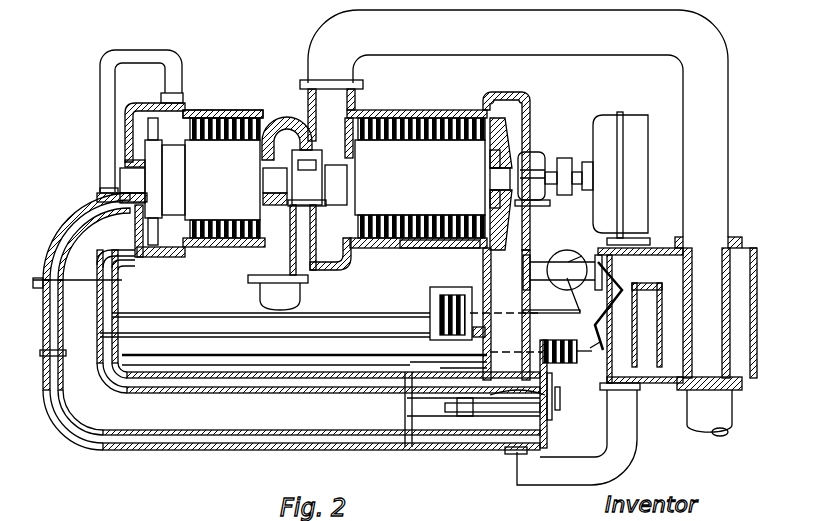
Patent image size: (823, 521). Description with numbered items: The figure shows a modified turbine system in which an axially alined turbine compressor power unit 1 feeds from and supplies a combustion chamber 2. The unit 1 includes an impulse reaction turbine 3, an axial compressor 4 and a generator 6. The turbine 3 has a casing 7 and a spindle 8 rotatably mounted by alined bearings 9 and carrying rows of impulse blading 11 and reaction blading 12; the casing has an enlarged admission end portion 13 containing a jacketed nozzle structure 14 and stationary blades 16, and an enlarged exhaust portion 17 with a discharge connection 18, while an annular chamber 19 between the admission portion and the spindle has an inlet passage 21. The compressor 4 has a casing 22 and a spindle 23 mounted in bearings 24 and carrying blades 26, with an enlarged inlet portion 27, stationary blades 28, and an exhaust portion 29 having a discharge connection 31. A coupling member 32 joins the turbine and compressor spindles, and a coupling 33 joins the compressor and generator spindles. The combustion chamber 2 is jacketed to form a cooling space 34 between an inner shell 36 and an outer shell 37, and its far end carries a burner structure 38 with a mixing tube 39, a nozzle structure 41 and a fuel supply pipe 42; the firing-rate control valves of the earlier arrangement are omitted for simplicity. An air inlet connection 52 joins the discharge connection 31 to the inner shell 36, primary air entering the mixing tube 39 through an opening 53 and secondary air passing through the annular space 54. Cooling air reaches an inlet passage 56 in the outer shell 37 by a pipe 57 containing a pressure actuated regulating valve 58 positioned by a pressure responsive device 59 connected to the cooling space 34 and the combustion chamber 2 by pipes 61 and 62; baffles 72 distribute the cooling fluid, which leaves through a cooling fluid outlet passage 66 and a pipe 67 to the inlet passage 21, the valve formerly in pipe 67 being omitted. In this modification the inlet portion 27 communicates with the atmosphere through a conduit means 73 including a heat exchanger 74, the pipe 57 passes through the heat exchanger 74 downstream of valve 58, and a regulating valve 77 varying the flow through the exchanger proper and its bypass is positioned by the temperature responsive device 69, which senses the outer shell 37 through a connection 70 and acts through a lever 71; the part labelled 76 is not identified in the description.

The turbine compressor power unit 1 is at (274, 83).
The combustion chamber 2 is at (321, 411).
The turbine 3 is at (224, 190).
The axial compressor 4 is at (431, 190).
The generator 6 is at (621, 178).
The casing 7 is at (192, 257).
The spindle 8 is at (268, 140).
The bearings 9 is at (203, 186).
The impulse blading 11 is at (165, 226).
The reaction blading 12 is at (242, 216).
The admission end portion 13 is at (152, 104).
The jacketed nozzle structure 14 is at (138, 262).
The stationary blades 16 is at (212, 248).
The exhaust portion 17 is at (270, 105).
The discharge connection 18 is at (255, 262).
The annular chamber 19 is at (170, 135).
The inlet passage 21 is at (183, 100).
The casing 22 is at (378, 250).
The spindle 23 is at (493, 150).
The bearings 24 is at (417, 179).
The blades 26 is at (443, 210).
The inlet portion 27 is at (333, 270).
The stationary blades 28 is at (420, 250).
The exhaust portion 29 is at (531, 100).
The discharge connection 31 is at (482, 262).
The coupling member 32 is at (320, 162).
The coupling 33 is at (554, 179).
The cooling space 34 is at (48, 368).
The inner shell 36 is at (45, 352).
The outer shell 37 is at (43, 315).
The burner structure 38 is at (562, 416).
The mixing tube 39 is at (410, 408).
The nozzle structure 41 is at (460, 407).
The fuel supply pipe 42 is at (560, 397).
The air inlet connection 52 is at (488, 362).
The opening 53 is at (508, 384).
The annular space 54 is at (440, 362).
The inlet passage 56 is at (508, 458).
The pipe 57 is at (553, 255).
The regulating valve 58 is at (580, 258).
The pressure responsive device 59 is at (452, 286).
The pipe 61 is at (378, 312).
The pipe 62 is at (368, 340).
The cooling fluid outlet passage 66 is at (100, 188).
The pipe 67 is at (100, 75).
The temperature responsive device 69 is at (565, 345).
The connection 70 is at (262, 347).
The lever 71 is at (593, 357).
The baffles 72 is at (405, 445).
The conduit means 73 is at (562, 57).
The heat exchanger 74 is at (745, 392).
The chamber 76 is at (640, 319).
The regulating valve 77 is at (625, 280).